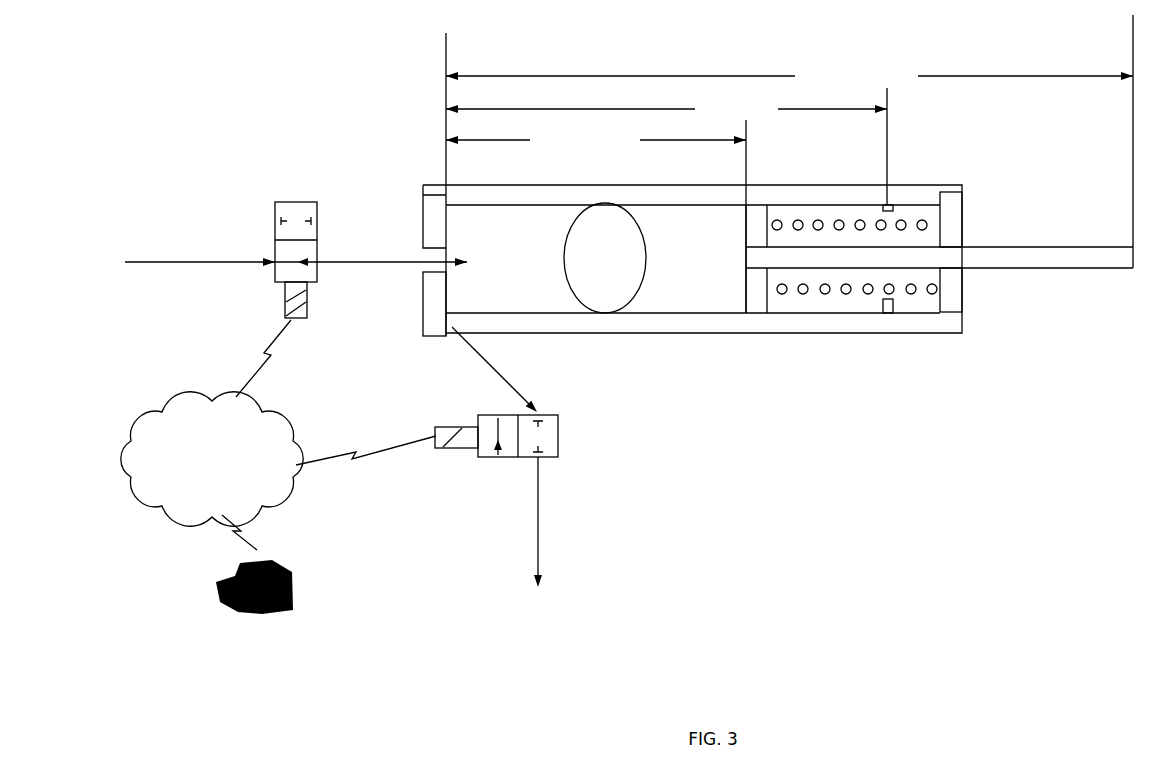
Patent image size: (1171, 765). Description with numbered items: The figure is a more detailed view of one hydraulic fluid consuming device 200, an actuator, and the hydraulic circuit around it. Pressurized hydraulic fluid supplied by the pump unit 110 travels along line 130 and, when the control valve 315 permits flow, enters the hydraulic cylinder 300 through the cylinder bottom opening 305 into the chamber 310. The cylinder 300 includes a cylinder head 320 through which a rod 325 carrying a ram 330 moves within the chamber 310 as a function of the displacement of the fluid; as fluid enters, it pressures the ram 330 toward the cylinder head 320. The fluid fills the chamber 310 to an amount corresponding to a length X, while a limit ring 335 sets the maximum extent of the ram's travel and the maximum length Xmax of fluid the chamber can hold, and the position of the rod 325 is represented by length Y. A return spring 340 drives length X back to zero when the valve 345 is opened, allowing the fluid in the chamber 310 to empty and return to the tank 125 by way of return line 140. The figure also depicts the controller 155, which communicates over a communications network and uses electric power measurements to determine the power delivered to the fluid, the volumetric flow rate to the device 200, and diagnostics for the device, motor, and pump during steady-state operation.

The hydraulic fluid consuming device 200 is at (320, 92).
The pump unit 110 is at (110, 231).
The tank 125 is at (541, 611).
The line 130 is at (190, 266).
The line 140 is at (233, 396).
The controller 155 is at (222, 590).
The hydraulic cylinder 300 is at (961, 150).
The cylinder bottom opening 305 is at (422, 218).
The chamber 310 is at (682, 303).
The control valve 315 is at (283, 202).
The cylinder head 320 is at (962, 219).
The rod 325 is at (1088, 268).
The ram 330 is at (758, 303).
The limit ring 335 is at (893, 301).
The return spring 340 is at (937, 287).
The valve 345 is at (558, 435).